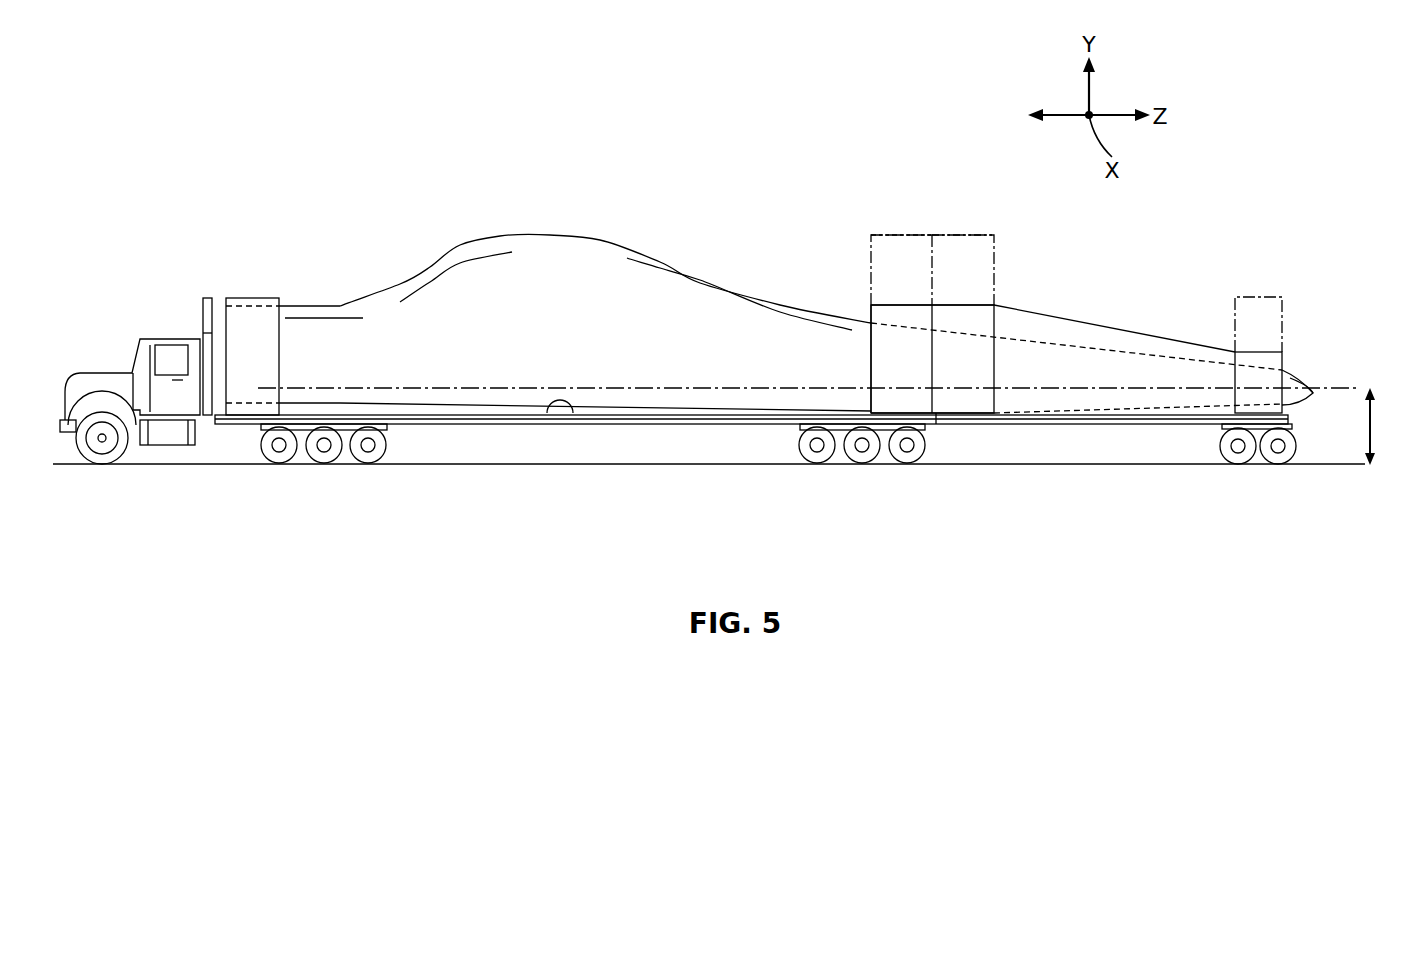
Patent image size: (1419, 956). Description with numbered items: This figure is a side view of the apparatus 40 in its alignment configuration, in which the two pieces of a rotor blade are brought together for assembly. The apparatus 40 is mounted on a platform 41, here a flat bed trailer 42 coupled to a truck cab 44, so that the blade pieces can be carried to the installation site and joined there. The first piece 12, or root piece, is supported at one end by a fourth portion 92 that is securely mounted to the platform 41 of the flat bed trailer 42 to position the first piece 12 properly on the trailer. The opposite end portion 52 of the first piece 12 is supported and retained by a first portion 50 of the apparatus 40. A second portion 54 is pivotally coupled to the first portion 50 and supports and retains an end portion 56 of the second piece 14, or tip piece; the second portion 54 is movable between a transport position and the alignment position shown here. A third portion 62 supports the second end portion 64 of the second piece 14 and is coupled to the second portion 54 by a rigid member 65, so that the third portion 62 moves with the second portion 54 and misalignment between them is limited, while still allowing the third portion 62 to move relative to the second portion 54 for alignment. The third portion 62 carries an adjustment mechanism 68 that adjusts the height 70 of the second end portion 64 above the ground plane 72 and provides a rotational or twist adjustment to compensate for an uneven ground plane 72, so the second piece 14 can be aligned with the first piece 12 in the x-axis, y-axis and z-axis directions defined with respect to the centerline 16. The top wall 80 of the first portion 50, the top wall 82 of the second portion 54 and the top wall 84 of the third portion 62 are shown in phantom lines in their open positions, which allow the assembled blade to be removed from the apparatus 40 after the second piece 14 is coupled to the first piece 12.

The first piece 12 is at (317, 327).
The second piece 14 is at (1193, 360).
The centerline 16 is at (1095, 387).
The apparatus 40 is at (980, 260).
The platform 41 is at (573, 415).
The flat bed trailer 42 is at (448, 425).
The truck cab 44 is at (160, 335).
The first portion 50 is at (897, 302).
The end portion 52 is at (888, 378).
The second portion 54 is at (995, 313).
The end portion 56 is at (947, 400).
The third portion 62 is at (1272, 347).
The second end portion 64 is at (1297, 393).
The rigid member 65 is at (1082, 318).
The adjustment mechanism 68 is at (1253, 437).
The height 70 is at (1382, 425).
The ground plane 72 is at (1090, 465).
The top wall 80 is at (903, 242).
The top wall 82 is at (953, 245).
The top wall 84 is at (1253, 308).
The fourth portion 92 is at (245, 313).